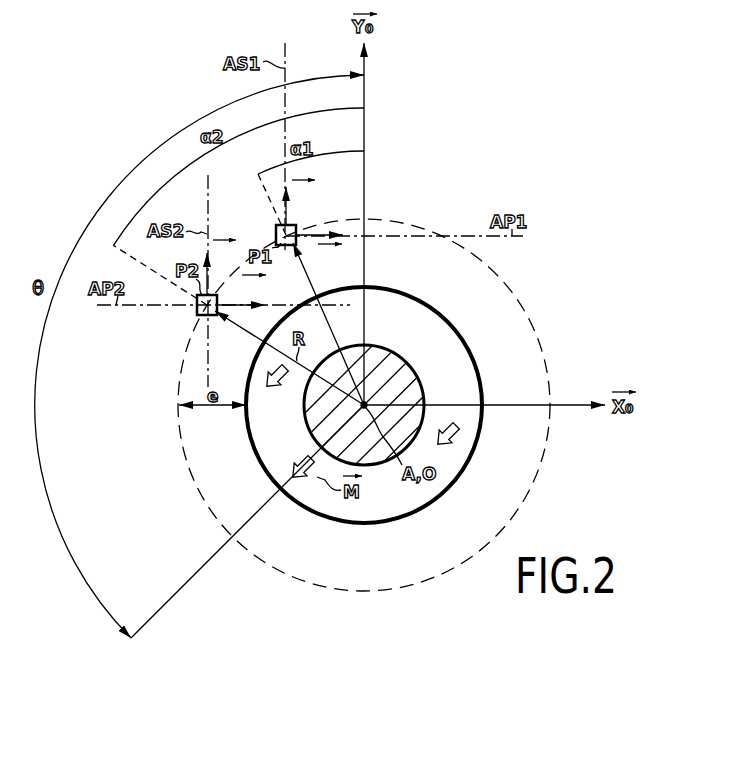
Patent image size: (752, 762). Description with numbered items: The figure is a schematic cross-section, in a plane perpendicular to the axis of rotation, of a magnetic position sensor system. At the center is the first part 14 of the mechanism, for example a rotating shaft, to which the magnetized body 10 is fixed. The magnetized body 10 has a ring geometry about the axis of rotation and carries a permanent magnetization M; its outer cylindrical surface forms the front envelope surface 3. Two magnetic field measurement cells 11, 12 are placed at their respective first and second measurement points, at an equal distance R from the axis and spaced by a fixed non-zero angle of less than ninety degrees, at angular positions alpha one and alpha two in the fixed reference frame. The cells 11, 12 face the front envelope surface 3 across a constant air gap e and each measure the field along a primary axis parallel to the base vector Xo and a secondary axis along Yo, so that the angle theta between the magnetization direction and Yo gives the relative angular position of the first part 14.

The front envelope surface 3 is at (467, 345).
The magnetized body 10 is at (279, 460).
The first magnetic field measurement cell 11 is at (277, 236).
The second magnetic field measurement cell 12 is at (197, 314).
The first part 14 is at (303, 410).